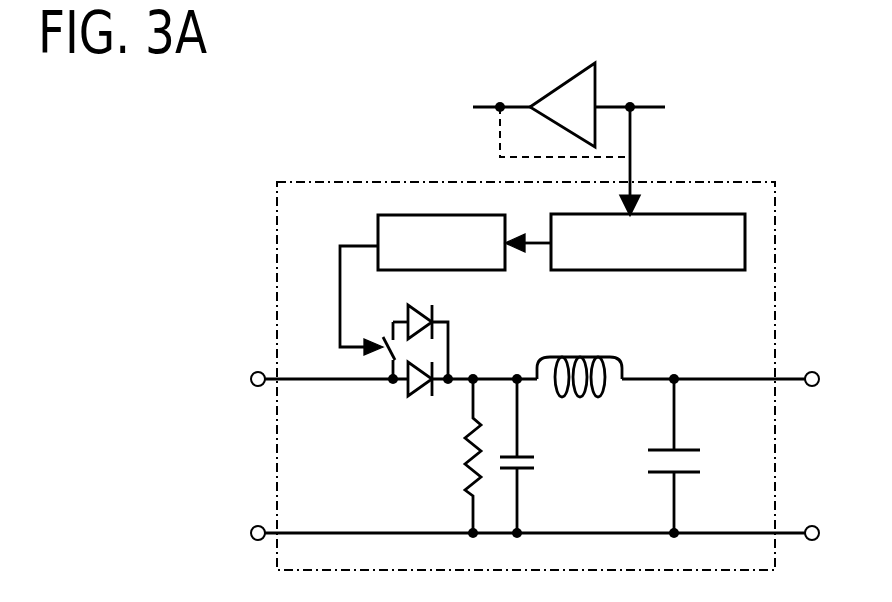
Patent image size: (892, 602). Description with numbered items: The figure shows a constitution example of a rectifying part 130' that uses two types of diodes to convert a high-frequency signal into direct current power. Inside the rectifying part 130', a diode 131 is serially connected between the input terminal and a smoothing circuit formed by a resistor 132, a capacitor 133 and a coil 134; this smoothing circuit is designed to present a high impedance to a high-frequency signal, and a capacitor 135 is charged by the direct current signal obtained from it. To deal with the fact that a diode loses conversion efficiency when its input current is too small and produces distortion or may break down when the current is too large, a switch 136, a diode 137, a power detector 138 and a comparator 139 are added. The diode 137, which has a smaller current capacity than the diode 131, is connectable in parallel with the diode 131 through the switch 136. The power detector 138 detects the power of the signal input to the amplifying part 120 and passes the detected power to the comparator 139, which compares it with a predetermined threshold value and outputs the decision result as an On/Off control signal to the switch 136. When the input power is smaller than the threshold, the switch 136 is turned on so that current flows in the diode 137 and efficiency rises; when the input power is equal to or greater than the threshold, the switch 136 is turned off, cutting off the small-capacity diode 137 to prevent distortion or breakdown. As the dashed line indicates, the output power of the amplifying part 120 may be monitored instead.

The amplifying part 120 is at (546, 85).
The rectifying part 130' is at (485, 376).
The diode 131 is at (424, 398).
The resistor 132 is at (460, 462).
The capacitor 133 is at (527, 456).
The coil 134 is at (618, 357).
The capacitor 135 is at (656, 473).
The switch 136 is at (386, 337).
The diode 137 is at (445, 315).
The power detector 138 is at (680, 271).
The comparator 139 is at (378, 232).